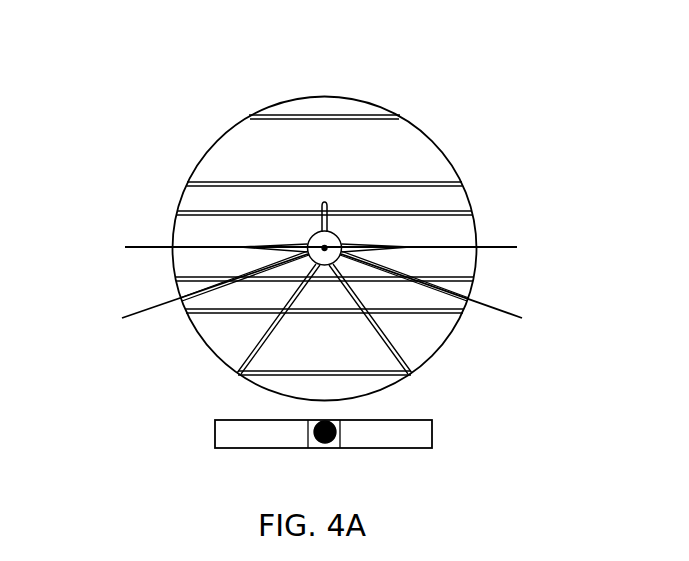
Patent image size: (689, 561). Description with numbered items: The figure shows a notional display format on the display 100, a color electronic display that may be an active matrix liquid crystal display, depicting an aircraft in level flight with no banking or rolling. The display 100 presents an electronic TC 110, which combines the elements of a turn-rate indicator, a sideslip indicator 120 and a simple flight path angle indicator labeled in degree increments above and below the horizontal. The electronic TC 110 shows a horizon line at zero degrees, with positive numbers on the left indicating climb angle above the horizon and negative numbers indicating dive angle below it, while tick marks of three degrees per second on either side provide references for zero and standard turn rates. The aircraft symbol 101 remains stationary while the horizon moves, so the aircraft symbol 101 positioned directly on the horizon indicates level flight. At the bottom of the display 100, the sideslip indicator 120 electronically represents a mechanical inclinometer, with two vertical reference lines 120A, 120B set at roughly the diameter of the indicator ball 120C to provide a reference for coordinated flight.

The display 100 is at (203, 95).
The electronic TC 110 is at (165, 150).
The aircraft symbol 101 is at (341, 241).
The sideslip indicator 120 is at (200, 433).
The vertical reference line 120A is at (308, 436).
The vertical reference line 120B is at (341, 436).
The indicator ball 120C is at (325, 444).